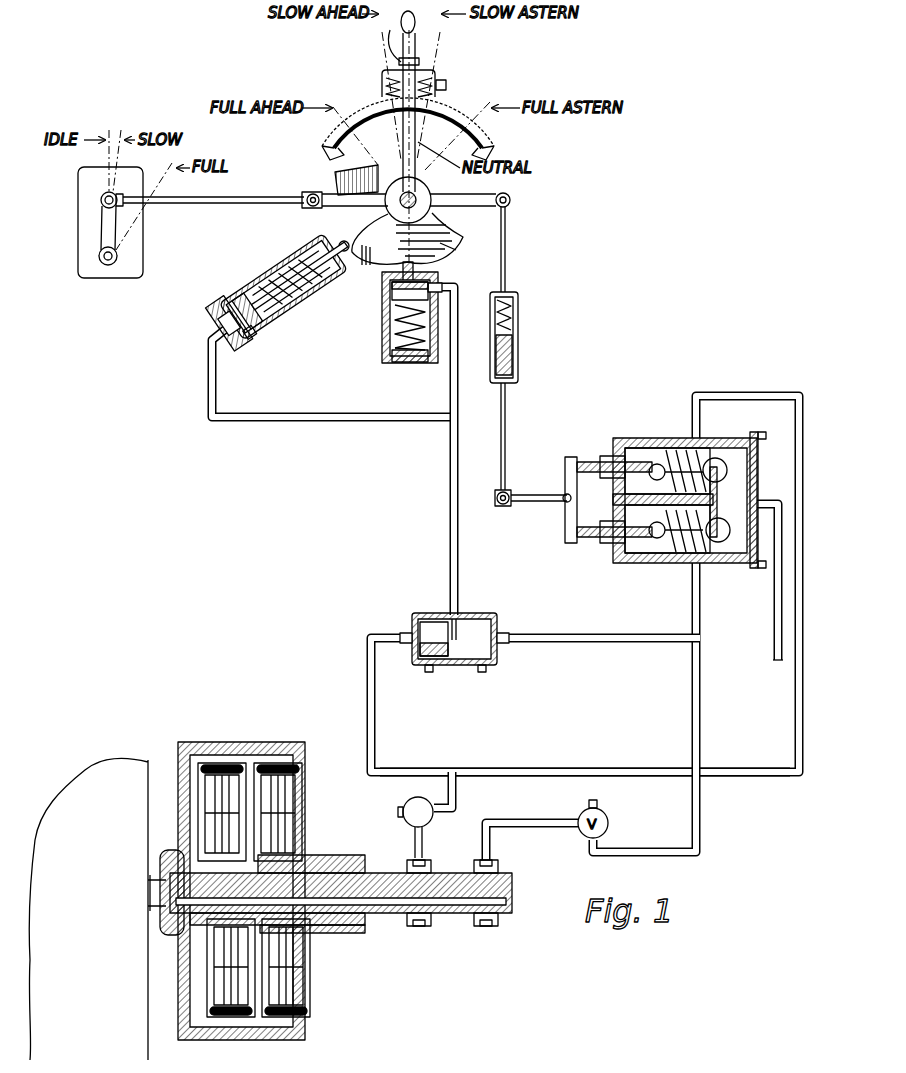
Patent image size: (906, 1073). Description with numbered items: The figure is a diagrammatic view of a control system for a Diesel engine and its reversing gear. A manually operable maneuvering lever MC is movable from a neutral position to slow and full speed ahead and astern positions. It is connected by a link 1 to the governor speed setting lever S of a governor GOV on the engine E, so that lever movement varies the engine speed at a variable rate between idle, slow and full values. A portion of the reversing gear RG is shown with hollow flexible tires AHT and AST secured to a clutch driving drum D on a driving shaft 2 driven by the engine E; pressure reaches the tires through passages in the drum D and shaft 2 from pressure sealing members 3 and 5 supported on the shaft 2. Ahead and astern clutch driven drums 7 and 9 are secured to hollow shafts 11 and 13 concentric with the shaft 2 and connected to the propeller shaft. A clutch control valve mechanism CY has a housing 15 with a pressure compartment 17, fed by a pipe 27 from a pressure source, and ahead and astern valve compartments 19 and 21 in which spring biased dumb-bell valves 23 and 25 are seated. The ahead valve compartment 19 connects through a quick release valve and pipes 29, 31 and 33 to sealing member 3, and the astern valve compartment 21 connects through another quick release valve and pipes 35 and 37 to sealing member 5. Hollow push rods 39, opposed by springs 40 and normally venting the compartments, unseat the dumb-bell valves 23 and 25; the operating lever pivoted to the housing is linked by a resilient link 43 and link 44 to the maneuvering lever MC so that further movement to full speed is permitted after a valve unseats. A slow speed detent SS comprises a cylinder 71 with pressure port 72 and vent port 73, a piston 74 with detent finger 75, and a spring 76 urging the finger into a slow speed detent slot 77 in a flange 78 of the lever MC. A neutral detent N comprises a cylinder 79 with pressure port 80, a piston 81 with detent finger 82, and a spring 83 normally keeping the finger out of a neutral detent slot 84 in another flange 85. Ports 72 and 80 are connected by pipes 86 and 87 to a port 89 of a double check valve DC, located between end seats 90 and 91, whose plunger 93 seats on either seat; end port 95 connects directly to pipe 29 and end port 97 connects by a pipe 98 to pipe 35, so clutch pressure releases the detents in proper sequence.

The link 1 is at (243, 203).
The driving shaft 2 is at (382, 914).
The pressure sealing member 3 is at (422, 926).
The pressure sealing member 5 is at (488, 926).
The ahead clutch driven drum 7 is at (224, 832).
The astern clutch driven drum 9 is at (284, 966).
The hollow shaft 11 is at (328, 926).
The hollow shaft 13 is at (350, 934).
The housing 15 is at (712, 560).
The pressure compartment 17 is at (738, 458).
The ahead valve compartment 19 is at (627, 454).
The astern valve compartment 21 is at (630, 560).
The dumb-bell valve 23 is at (722, 482).
The dumb-bell valve 25 is at (680, 558).
The pipe 27 is at (772, 640).
The pipe 29 is at (555, 768).
The pipe 31 is at (458, 792).
The pipe 33 is at (424, 838).
The pipe 35 is at (701, 678).
The pipe 37 is at (542, 826).
The hollow push rod 39 is at (592, 464).
The spring 40 is at (672, 452).
The resiliently compressible and extensible link 43 is at (519, 333).
The link 44 is at (550, 502).
The cylinder 71 is at (390, 342).
The pressure port 72 is at (441, 284).
The vent port 73 is at (410, 363).
The piston 74 is at (436, 330).
The detent finger 75 is at (372, 256).
The spring 76 is at (386, 326).
The slow speed detent slot 77 is at (459, 252).
The flange 78 is at (441, 228).
The cylinder 79 is at (261, 340).
The pressure port 80 is at (211, 336).
The piston 81 is at (266, 261).
The detent finger 82 is at (362, 262).
The spring 83 is at (288, 258).
The neutral detent slot 84 is at (338, 207).
The flange 85 is at (334, 185).
The pipe 86 is at (449, 466).
The pipe 87 is at (304, 412).
The port 89 is at (459, 612).
The end seat 90 is at (429, 666).
The end seat 91 is at (482, 666).
The plunger 93 is at (432, 622).
The end port 95 is at (402, 640).
The end port 97 is at (508, 640).
The pipe 98 is at (585, 634).
The governor GOV is at (80, 190).
The governor speed setting lever S is at (104, 237).
The neutral lever detent N is at (219, 308).
The slow speed lever detent SS is at (378, 312).
The maneuvering lever MC is at (405, 139).
The control cylinder CY is at (643, 440).
The double check valve DC is at (420, 616).
The clutch driving drum D is at (236, 748).
The engine E is at (108, 778).
The reversing gear RG is at (322, 852).
The ahead driving tire AHT is at (230, 1012).
The astern driving tire AST is at (295, 1012).